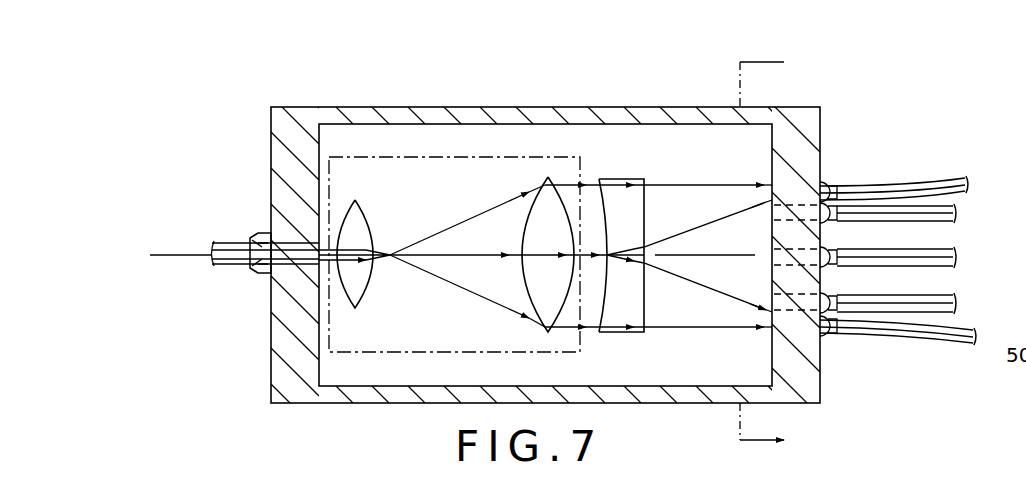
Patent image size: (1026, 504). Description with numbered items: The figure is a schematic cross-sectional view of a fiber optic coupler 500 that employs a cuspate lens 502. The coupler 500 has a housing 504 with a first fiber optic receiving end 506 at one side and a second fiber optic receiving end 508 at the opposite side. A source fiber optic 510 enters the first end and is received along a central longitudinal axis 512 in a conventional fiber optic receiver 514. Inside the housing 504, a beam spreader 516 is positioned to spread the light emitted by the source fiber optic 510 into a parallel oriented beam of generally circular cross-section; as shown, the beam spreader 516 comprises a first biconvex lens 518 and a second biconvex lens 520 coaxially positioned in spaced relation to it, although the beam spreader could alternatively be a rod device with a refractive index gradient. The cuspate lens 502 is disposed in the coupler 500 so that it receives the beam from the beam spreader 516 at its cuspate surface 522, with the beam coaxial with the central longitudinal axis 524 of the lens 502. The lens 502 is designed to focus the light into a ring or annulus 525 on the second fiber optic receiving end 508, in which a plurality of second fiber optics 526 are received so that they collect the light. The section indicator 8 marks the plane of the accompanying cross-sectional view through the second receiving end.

The fiber optic coupler 500 is at (396, 411).
The cuspate lens 502 is at (628, 290).
The housing 504 is at (400, 107).
The first fiber optic receiving end 506 is at (270, 130).
The second fiber optic receiving end 508 is at (807, 137).
The source fiber optic 510 is at (243, 270).
The central longitudinal axis 512 is at (193, 250).
The fiber optic receiver 514 is at (250, 234).
The beam spreader 516 is at (450, 157).
The first biconvex lens 518 is at (372, 230).
The second biconvex lens 520 is at (535, 282).
The cuspate surface 522 is at (598, 292).
The central longitudinal axis of the lens 524 is at (686, 255).
The ring or annulus 525 is at (758, 190).
The second fiber optics 526 is at (935, 185).
The section line 8- 8 is at (774, 252).